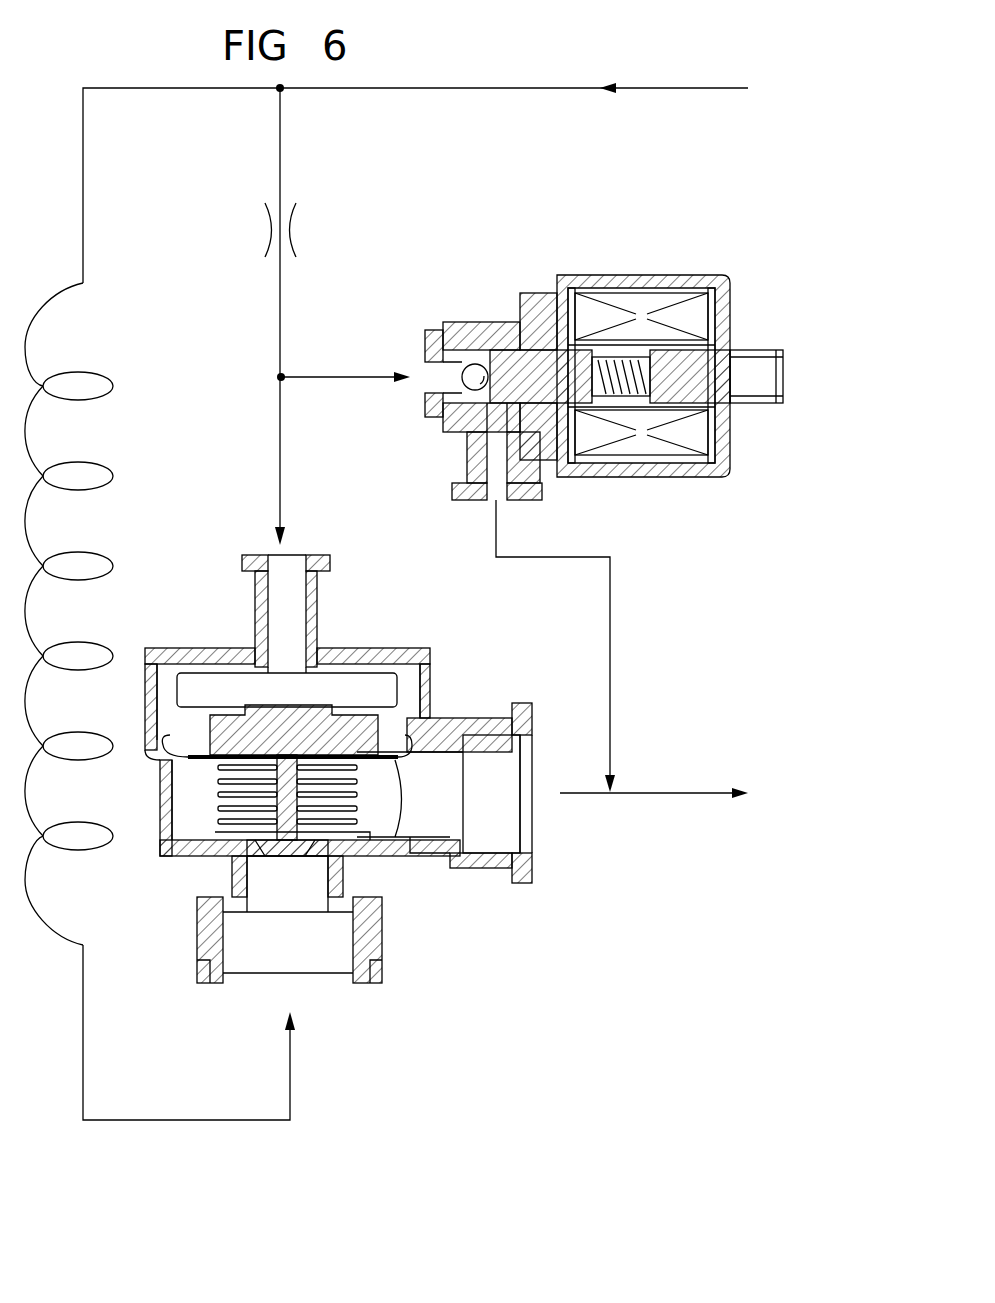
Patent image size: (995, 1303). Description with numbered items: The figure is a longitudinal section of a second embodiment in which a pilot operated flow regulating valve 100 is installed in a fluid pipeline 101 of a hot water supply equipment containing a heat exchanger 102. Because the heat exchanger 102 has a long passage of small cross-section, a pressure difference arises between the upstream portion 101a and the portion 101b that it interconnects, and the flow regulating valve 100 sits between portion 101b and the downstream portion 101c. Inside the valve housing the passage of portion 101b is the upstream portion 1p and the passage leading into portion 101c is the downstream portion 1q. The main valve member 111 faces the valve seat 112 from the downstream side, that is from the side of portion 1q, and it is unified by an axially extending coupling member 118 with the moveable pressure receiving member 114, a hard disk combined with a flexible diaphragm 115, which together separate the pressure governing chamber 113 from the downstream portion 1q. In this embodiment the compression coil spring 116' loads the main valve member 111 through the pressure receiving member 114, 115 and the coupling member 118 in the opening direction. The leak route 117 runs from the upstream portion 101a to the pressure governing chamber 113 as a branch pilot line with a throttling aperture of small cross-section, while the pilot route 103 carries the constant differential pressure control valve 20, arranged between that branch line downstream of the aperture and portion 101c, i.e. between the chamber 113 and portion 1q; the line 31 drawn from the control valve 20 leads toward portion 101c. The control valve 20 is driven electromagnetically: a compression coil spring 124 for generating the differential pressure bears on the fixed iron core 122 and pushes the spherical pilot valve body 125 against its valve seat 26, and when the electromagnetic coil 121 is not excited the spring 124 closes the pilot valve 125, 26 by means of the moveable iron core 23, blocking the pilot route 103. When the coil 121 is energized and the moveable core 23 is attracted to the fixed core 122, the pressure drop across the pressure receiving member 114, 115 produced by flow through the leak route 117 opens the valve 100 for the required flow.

The fluid pipeline 101 is at (475, 90).
The upstream portion of pipeline 101a is at (185, 92).
The pipeline portion downstream of heat exchanger 101b is at (135, 1115).
The downstream portion of pipeline 101c is at (660, 800).
The heat exchanger 102 is at (108, 496).
The pilot route 103 is at (346, 380).
The leak route 117 is at (298, 236).
The control pressure line 31 is at (612, 598).
The constant differential pressure control valve 20 is at (676, 238).
The moveable iron core 23 is at (528, 350).
The valve seat 26 is at (460, 406).
The spherical pilot valve body 125 is at (468, 360).
The fixed iron core 122 is at (726, 372).
The electromagnetic coil 121 is at (661, 443).
The compression coil spring for generating differential pressure 124 is at (645, 440).
The pilot operated flow regulating valve 100 is at (210, 612).
The pressure governing chamber 113 is at (356, 685).
The moveable pressure receiving member 114 is at (212, 770).
The flexible diaphragm 115 is at (170, 796).
The compression coil spring 116' is at (338, 794).
The coupling member 118 is at (288, 808).
The valve seat 112 is at (340, 846).
The main valve member 111 is at (336, 852).
The upstream portion 1p is at (340, 952).
The downstream portion 1q is at (492, 840).